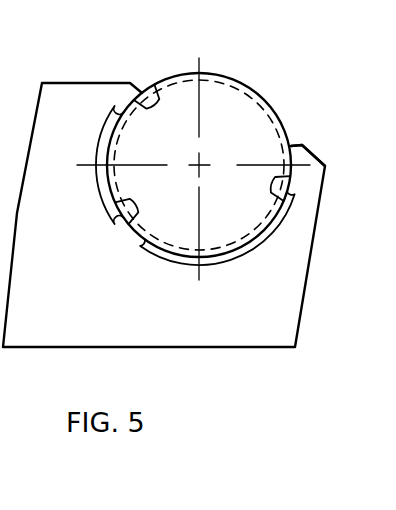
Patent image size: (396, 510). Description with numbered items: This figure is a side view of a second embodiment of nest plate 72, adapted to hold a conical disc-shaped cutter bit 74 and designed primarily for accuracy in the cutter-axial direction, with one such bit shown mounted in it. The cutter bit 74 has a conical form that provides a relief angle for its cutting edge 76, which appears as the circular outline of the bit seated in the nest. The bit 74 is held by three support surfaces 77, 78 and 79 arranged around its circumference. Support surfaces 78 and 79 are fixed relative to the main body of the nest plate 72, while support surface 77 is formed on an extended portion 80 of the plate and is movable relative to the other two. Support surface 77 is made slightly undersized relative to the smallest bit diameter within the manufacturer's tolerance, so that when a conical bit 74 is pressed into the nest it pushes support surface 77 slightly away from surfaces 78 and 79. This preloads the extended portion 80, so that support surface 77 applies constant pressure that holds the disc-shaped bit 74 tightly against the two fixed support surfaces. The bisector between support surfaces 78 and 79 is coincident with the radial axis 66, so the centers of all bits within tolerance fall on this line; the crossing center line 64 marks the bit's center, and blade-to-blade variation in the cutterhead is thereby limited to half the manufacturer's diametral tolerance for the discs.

The vertical center axis line 64 is at (199, 66).
The radial axis 66 is at (86, 164).
The nest plate 72 is at (96, 302).
The cutter bit 74 is at (240, 147).
The cutting edge 76 is at (266, 96).
The support surface 77 is at (268, 204).
The support surface 78 is at (156, 92).
The support surface 79 is at (127, 209).
The extended portion 80 is at (327, 178).